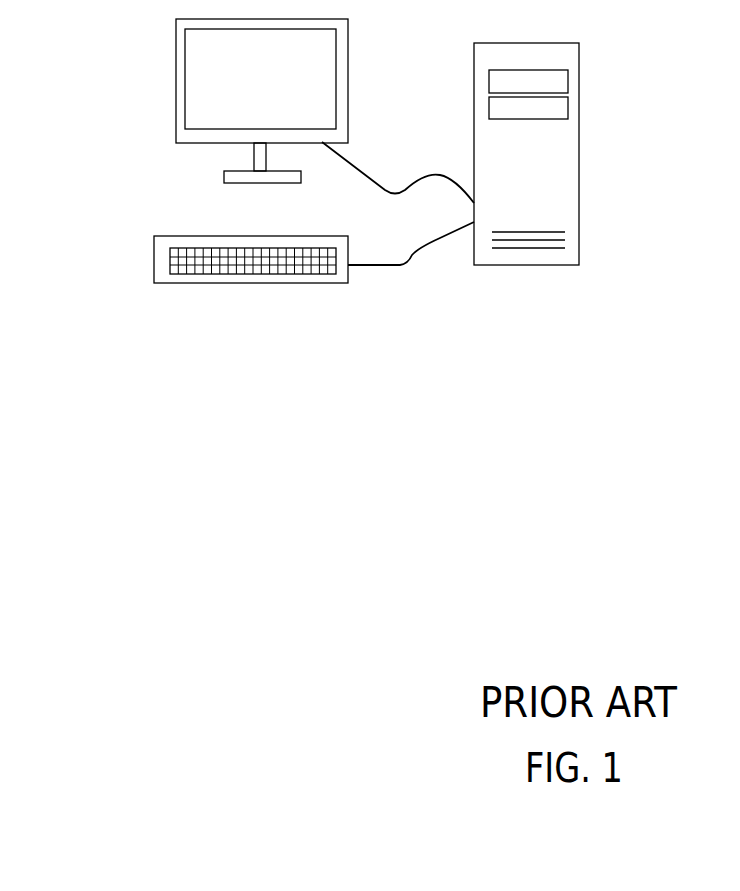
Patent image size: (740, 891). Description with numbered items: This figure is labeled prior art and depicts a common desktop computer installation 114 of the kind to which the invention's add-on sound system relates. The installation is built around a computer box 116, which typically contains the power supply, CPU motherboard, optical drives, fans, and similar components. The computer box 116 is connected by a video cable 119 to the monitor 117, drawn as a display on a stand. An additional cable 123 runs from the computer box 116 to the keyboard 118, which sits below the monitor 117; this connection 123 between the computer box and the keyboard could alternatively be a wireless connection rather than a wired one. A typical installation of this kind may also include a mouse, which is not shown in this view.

The desktop computer installation 114 is at (341, 490).
The computer box 116 is at (587, 208).
The monitor 117 is at (167, 74).
The keyboard 118 is at (147, 278).
The video cable 119 is at (387, 180).
The additional cable 123 is at (422, 273).